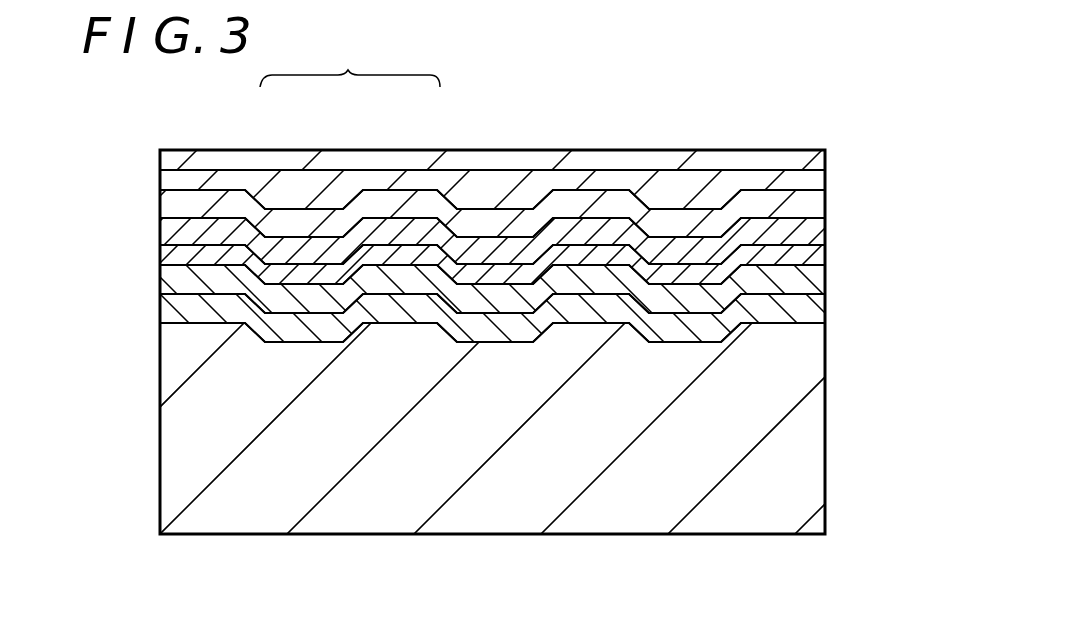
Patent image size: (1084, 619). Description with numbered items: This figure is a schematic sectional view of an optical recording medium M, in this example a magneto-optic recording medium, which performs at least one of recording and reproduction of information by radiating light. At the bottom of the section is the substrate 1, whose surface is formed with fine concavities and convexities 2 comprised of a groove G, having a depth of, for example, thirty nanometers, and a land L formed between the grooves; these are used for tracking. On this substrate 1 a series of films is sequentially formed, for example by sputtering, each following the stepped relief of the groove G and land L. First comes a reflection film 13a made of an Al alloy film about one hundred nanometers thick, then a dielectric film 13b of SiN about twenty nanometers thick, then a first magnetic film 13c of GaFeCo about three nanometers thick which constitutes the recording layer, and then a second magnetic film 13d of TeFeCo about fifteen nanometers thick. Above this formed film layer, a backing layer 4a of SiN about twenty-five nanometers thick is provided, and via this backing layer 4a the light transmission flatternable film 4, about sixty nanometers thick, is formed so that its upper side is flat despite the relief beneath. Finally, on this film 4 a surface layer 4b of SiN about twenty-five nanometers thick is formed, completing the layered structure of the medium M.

The substrate 1 is at (728, 523).
The fine concavities and convexities 2 is at (350, 63).
The light transmission flatternable film 4 is at (698, 185).
The backing layer 4a is at (755, 213).
The surface layer 4b is at (668, 155).
The reflection film 13a is at (815, 308).
The dielectric film 13b is at (812, 277).
The first magnetic film 13c is at (812, 255).
The second magnetic film 13d is at (812, 230).
The groove G is at (307, 335).
The land L is at (405, 323).
The optical recording medium M is at (879, 558).